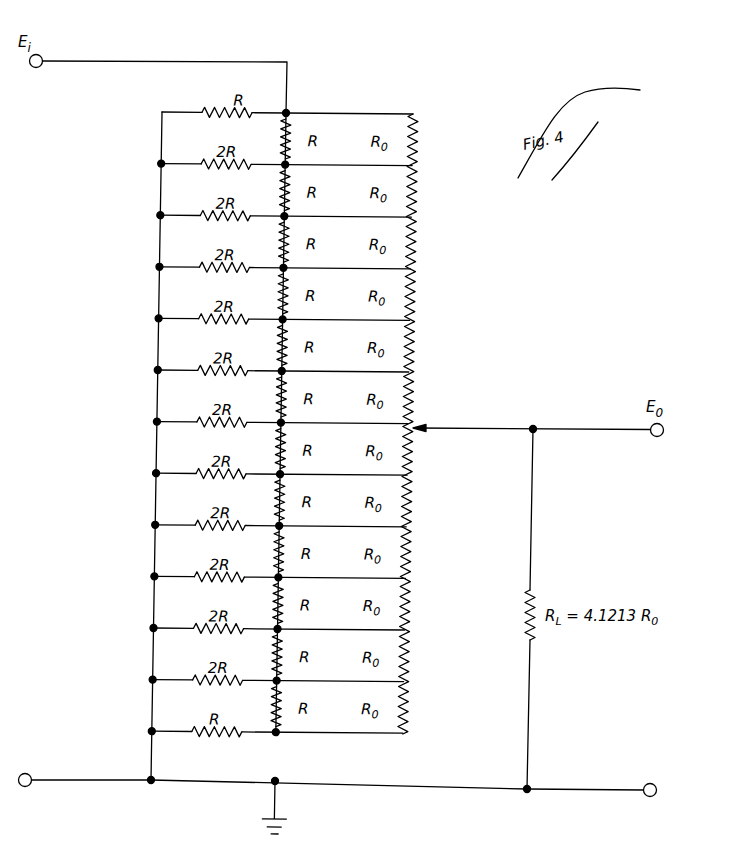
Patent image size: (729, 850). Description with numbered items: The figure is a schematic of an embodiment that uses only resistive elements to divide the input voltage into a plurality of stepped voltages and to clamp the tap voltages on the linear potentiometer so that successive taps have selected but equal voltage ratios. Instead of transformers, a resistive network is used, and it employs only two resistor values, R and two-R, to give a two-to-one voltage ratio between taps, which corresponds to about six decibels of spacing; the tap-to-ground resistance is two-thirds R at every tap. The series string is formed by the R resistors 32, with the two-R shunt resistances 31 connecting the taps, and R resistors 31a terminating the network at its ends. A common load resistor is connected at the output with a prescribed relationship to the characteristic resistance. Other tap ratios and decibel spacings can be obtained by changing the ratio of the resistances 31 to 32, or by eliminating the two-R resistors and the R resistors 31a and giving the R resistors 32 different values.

The R resistor 31a is at (204, 111).
The resistance 31 is at (207, 375).
The R resistor 32 is at (283, 243).